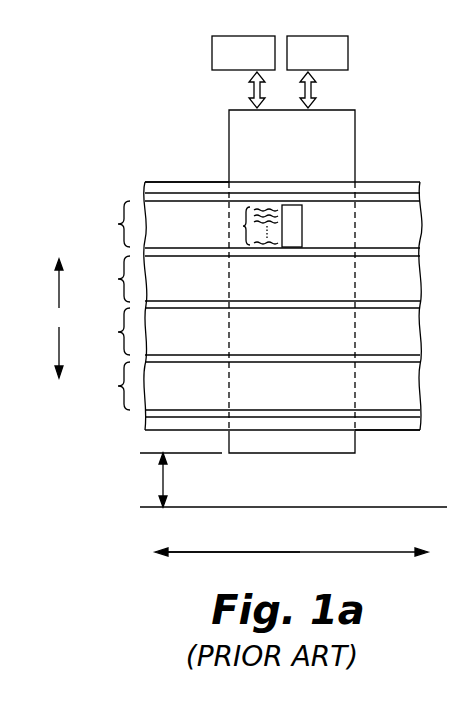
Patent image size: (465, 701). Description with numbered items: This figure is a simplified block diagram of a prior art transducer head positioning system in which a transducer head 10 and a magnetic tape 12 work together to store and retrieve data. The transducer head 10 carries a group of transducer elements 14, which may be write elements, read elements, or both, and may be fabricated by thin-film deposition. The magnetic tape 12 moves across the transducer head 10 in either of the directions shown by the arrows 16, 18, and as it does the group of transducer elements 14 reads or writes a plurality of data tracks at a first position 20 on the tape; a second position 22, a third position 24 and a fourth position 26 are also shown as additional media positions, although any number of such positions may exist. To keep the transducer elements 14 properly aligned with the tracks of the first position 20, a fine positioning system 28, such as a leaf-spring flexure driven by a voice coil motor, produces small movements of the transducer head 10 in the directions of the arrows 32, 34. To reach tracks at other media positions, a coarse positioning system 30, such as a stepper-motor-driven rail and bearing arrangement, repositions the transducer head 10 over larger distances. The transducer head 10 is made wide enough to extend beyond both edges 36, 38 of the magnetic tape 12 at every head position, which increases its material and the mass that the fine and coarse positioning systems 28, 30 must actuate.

The transducer head 10 is at (340, 118).
The magnetic tape 12 is at (377, 213).
The group of transducer elements 14 is at (302, 230).
The tape movement direction arrow 16 is at (380, 553).
The tape movement direction arrow 18 is at (208, 553).
The first position 20 is at (108, 224).
The second position 22 is at (108, 279).
The third position 24 is at (108, 331).
The fourth position 26 is at (108, 386).
The fine positioning system 28 is at (348, 55).
The coarse positioning system 30 is at (212, 55).
The head movement direction arrow 32 is at (57, 290).
The head movement direction arrow 34 is at (57, 346).
The edge of magnetic tape 36 is at (176, 182).
The edge of magnetic tape 38 is at (376, 431).